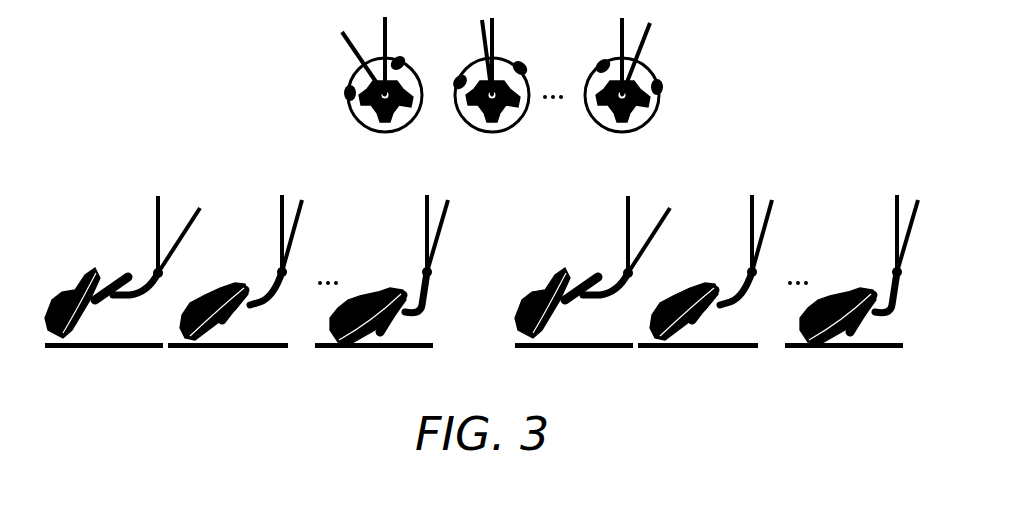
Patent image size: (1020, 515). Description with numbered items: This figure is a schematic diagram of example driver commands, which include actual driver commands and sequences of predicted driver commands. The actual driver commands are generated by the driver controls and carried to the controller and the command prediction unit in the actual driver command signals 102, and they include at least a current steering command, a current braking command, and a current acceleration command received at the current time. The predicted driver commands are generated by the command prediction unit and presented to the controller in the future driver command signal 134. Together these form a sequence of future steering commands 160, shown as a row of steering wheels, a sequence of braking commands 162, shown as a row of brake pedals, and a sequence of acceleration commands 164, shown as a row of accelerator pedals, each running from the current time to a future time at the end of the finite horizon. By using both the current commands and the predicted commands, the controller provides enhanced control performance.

The actual driver command signals 102 is at (213, 62).
The future driver command signal 134 is at (475, 206).
The sequence of future steering commands 160 is at (653, 127).
The sequence of braking commands 162 is at (447, 352).
The sequence of acceleration commands 164 is at (917, 352).